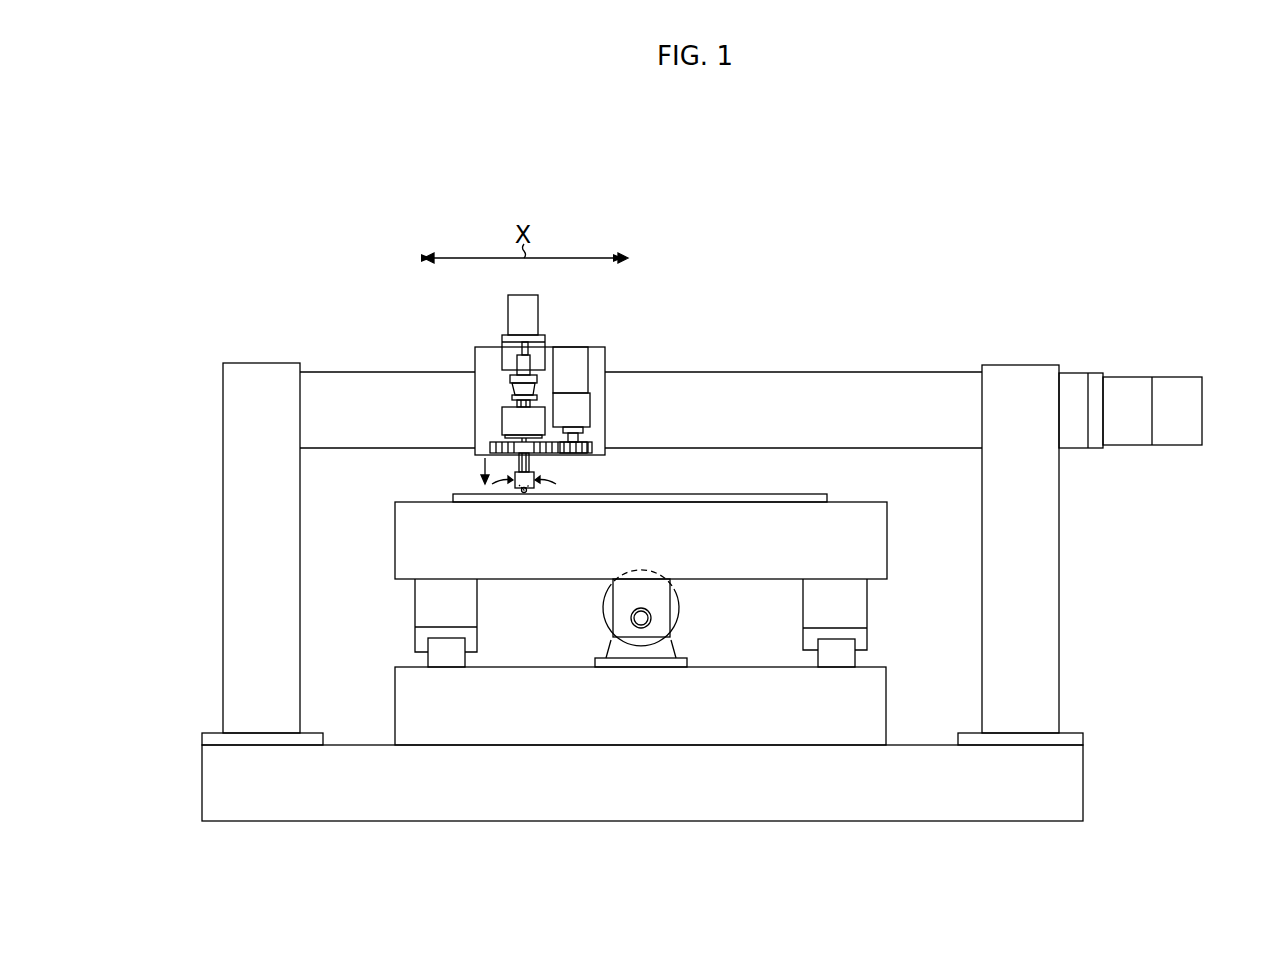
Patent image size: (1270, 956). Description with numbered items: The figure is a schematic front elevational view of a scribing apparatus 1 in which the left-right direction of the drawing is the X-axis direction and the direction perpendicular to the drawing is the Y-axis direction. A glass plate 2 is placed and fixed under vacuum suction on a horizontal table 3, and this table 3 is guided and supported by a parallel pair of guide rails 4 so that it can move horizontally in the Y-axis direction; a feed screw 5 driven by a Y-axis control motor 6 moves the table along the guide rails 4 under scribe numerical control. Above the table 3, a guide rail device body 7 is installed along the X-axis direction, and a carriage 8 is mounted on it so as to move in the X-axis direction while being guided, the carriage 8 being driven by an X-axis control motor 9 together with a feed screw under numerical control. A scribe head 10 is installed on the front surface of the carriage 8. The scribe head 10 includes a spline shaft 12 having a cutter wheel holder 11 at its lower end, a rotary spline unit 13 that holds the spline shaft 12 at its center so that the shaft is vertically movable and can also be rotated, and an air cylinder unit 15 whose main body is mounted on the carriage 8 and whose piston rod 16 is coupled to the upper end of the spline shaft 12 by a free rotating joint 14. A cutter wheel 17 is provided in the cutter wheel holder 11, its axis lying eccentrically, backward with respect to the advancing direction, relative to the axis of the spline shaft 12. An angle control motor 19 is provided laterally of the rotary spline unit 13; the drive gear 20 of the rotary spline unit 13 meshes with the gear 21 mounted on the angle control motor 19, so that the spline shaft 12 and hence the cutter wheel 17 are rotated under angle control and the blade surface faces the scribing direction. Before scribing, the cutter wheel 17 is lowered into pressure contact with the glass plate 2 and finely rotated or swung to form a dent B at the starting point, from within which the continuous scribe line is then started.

The scribing apparatus 1 is at (1045, 354).
The glass plate 2 is at (679, 494).
The horizontal table 3 is at (865, 535).
The guide rails 4 is at (440, 655).
The feed screw 5 is at (640, 618).
The Y-axis control motor 6 is at (637, 650).
The guide rail device body 7 is at (801, 384).
The carriage 8 is at (490, 358).
The X-axis control motor 9 is at (1175, 395).
The scribe head 10 is at (552, 339).
The cutter wheel holder 11 is at (531, 491).
The spline shaft 12 is at (529, 464).
The rotary spline unit 13 is at (510, 422).
The free rotating joint 14 is at (512, 380).
The air cylinder unit 15 is at (520, 318).
The piston rod 16 is at (522, 350).
The cutter wheel 17 is at (518, 491).
The angle control motor 19 is at (580, 404).
The drive gear 20 is at (500, 451).
The gear 21 is at (581, 454).
The dent B is at (524, 494).